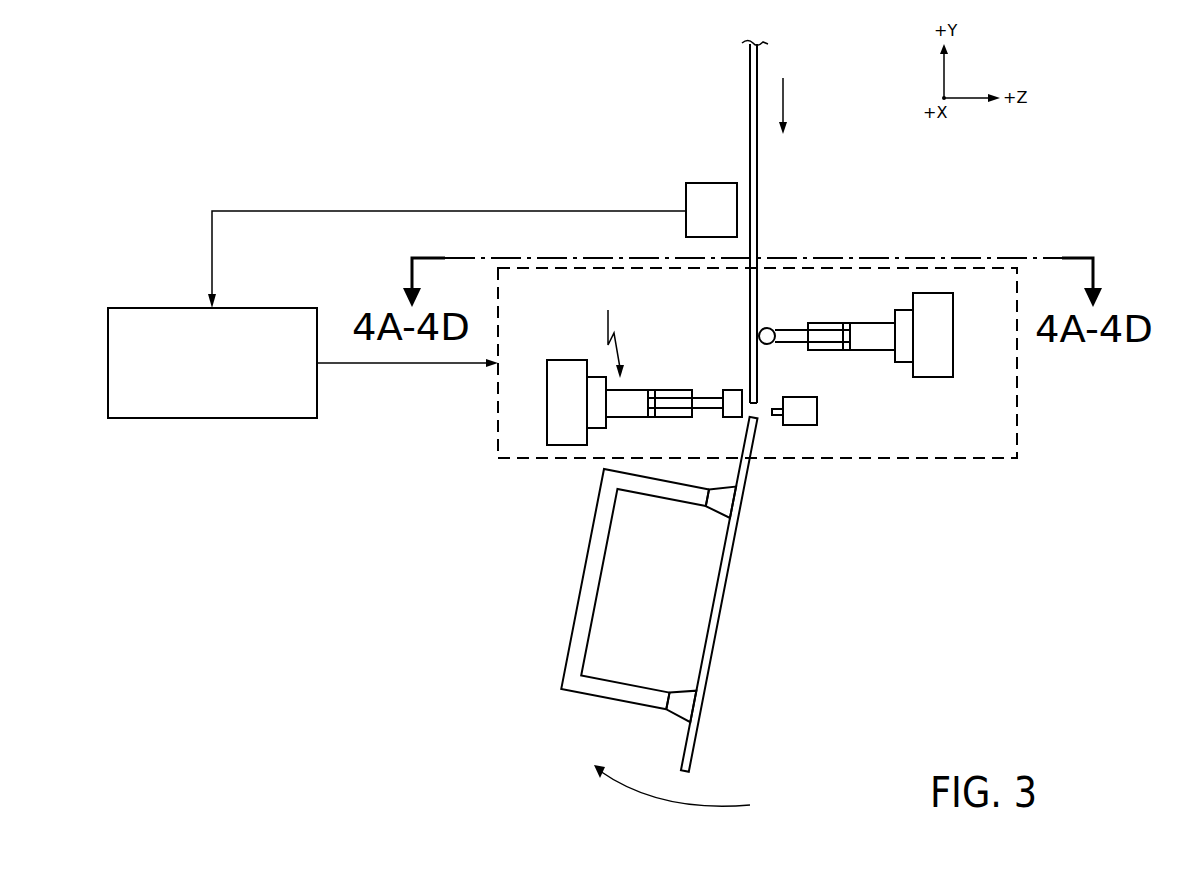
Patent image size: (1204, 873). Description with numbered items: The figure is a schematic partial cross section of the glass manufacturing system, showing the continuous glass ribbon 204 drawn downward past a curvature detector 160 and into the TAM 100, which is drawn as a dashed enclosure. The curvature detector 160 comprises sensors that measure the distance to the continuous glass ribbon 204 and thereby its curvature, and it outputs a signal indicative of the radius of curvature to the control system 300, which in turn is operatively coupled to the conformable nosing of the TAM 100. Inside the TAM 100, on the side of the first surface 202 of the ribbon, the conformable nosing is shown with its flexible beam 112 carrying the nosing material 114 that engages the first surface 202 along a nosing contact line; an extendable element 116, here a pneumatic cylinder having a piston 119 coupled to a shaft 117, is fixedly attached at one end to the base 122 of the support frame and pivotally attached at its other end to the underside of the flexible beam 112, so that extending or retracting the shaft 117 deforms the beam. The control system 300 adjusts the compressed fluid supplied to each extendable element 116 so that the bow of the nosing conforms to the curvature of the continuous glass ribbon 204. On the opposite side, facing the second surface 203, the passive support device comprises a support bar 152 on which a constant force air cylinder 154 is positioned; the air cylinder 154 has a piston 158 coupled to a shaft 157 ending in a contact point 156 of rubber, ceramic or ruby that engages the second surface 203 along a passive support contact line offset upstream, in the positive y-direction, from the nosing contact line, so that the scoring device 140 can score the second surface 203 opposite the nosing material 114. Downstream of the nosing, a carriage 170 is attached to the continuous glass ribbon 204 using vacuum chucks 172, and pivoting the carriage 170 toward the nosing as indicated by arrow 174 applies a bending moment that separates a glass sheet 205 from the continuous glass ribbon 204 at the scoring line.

The TAM 100 is at (950, 458).
The flexible beam 112 is at (723, 416).
The nosing material 114 is at (746, 395).
The extendable element 116 is at (608, 329).
The shaft 117 is at (703, 395).
The piston 119 is at (652, 390).
The base 122 is at (565, 360).
The scoring device 140 is at (817, 413).
The support bar 152 is at (940, 377).
The constant force air cylinder 154 is at (877, 360).
The contact point 156 is at (771, 344).
The shaft 157 is at (788, 328).
The piston 158 is at (847, 327).
The curvature detector 160 is at (686, 193).
The carriage 170 is at (548, 573).
The vacuum chuck 172 is at (713, 511).
The arrow 174 is at (656, 800).
The first surface 202 is at (758, 166).
The second surface 203 is at (750, 122).
The continuous glass ribbon 204 is at (745, 69).
The glass sheet 205 is at (730, 580).
The control system 300 is at (136, 308).